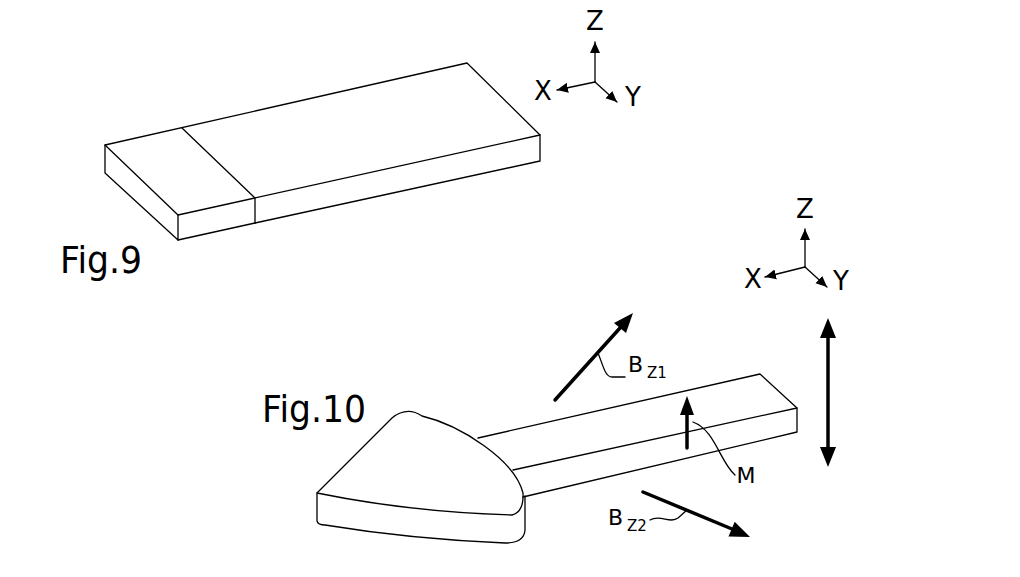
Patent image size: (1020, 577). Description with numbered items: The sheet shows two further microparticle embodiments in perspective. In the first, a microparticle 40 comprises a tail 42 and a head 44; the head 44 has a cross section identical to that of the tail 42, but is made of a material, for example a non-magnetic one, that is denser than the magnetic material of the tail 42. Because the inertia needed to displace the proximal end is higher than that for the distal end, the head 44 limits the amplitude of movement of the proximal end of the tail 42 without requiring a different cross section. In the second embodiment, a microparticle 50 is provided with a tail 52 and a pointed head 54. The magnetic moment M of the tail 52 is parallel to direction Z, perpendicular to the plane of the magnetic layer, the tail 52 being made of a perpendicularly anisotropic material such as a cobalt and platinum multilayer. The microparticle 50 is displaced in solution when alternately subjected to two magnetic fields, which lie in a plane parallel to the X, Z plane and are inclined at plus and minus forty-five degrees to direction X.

In FIG. 9, the microparticle 40 is at (485, 22).
In FIG. 9, the tail 42 is at (353, 190).
In FIG. 9, the head 44 is at (222, 220).
In FIG. 10, the microparticle 50 is at (335, 360).
In FIG. 10, the tail 52 is at (529, 424).
In FIG. 10, the pointed head 54 is at (313, 512).